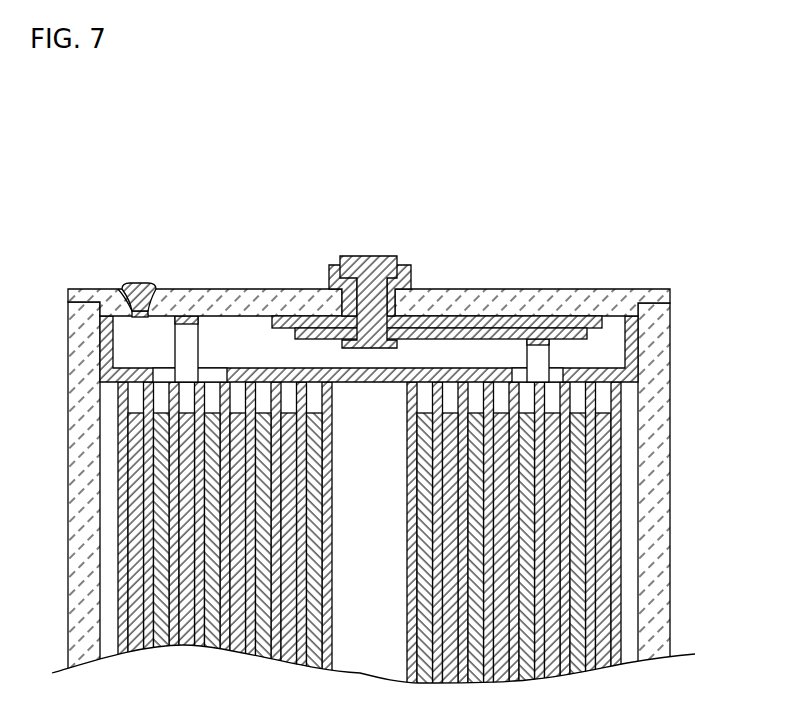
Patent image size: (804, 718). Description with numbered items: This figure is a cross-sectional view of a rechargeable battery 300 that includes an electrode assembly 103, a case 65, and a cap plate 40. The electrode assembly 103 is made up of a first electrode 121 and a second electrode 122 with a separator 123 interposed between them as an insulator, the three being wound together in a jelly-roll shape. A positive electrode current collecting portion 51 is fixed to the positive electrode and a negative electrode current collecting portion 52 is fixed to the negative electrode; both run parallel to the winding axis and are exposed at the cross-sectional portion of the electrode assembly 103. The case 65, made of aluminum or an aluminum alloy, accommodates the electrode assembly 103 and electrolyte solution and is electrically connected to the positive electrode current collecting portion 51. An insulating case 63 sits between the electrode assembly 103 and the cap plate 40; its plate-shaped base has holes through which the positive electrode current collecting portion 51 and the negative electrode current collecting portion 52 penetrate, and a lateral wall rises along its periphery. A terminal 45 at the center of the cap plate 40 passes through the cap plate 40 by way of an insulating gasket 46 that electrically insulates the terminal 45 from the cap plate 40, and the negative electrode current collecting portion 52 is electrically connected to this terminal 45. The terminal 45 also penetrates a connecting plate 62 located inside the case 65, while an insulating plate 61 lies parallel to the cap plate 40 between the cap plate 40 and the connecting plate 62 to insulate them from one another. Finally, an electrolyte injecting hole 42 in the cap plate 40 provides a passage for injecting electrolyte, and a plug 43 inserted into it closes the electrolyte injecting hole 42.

The rechargeable battery 300 is at (257, 217).
The cap plate 40 is at (650, 292).
The electrolyte injecting hole 42 is at (120, 305).
The plug 43 is at (130, 283).
The terminal 45 is at (363, 256).
The insulating gasket 46 is at (404, 266).
The positive electrode current collecting portion 51 is at (180, 348).
The negative electrode current collecting portion 52 is at (538, 352).
The insulating plate 61 is at (587, 332).
The connecting plate 62 is at (562, 322).
The insulating case 63 is at (638, 337).
The case 65 is at (662, 395).
The electrode assembly 103 is at (444, 542).
The first electrode 121 is at (605, 563).
The second electrode 122 is at (607, 597).
The separator 123 is at (613, 530).